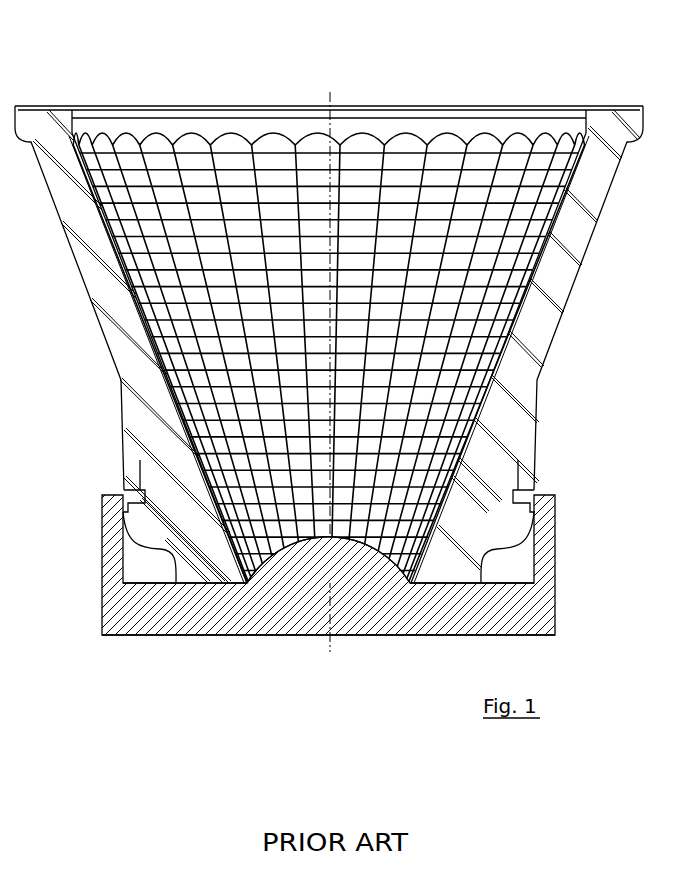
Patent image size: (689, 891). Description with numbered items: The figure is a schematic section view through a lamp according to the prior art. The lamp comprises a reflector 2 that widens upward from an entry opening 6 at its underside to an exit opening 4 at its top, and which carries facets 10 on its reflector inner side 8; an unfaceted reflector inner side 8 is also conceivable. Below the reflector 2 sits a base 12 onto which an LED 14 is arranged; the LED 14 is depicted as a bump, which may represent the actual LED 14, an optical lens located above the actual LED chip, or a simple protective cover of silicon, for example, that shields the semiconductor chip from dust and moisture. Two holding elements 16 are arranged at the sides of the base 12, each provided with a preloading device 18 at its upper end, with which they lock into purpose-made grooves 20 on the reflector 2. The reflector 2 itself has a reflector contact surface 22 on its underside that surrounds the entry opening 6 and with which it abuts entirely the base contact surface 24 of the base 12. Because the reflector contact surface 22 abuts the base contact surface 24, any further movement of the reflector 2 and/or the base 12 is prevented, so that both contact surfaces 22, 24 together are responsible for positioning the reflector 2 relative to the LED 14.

The reflector 2 is at (378, 130).
The exit opening 4 is at (243, 84).
The entry opening 6 is at (247, 586).
The reflector inner side 8 is at (520, 168).
The facets 10 is at (493, 297).
The base 12 is at (412, 612).
The LED 14 is at (300, 567).
The holding elements 16 is at (103, 550).
The preloading device 18 is at (126, 490).
The grooves 20 is at (122, 413).
The reflector contact surface 22 is at (205, 600).
The base contact surface 24 is at (328, 545).